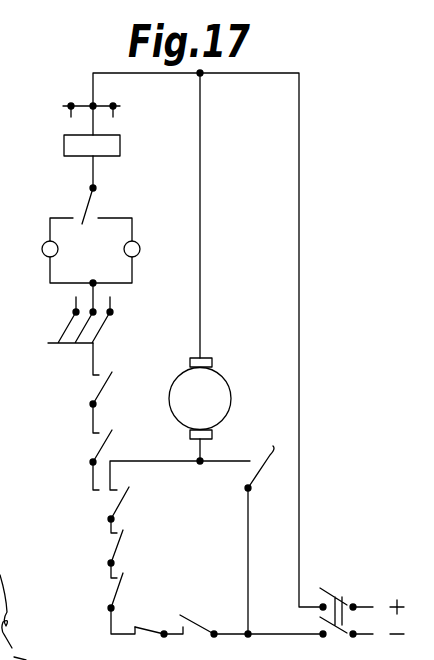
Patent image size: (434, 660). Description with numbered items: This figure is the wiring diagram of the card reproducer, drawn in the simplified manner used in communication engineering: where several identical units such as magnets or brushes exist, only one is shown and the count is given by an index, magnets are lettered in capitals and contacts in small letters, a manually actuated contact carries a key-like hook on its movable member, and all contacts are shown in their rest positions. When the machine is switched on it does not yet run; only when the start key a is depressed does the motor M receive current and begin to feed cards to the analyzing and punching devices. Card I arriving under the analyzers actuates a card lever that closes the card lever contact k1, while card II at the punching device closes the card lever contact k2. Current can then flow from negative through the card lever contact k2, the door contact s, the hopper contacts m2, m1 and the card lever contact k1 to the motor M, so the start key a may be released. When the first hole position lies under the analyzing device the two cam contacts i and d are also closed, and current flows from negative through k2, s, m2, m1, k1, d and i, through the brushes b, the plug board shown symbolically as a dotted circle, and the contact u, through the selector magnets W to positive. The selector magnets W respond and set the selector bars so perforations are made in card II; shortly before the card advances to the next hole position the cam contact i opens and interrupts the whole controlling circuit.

The selector magnets W is at (129, 131).
The contact u is at (104, 234).
The brushes b is at (109, 320).
The cam contact i is at (92, 389).
The cam contact d is at (90, 447).
The card lever contact k1 is at (99, 505).
The hopper contact m1 is at (96, 548).
The hopper contact m2 is at (97, 592).
The door contact s is at (151, 617).
The card lever contact k2 is at (203, 615).
The start key a is at (262, 540).
The motor M is at (200, 411).